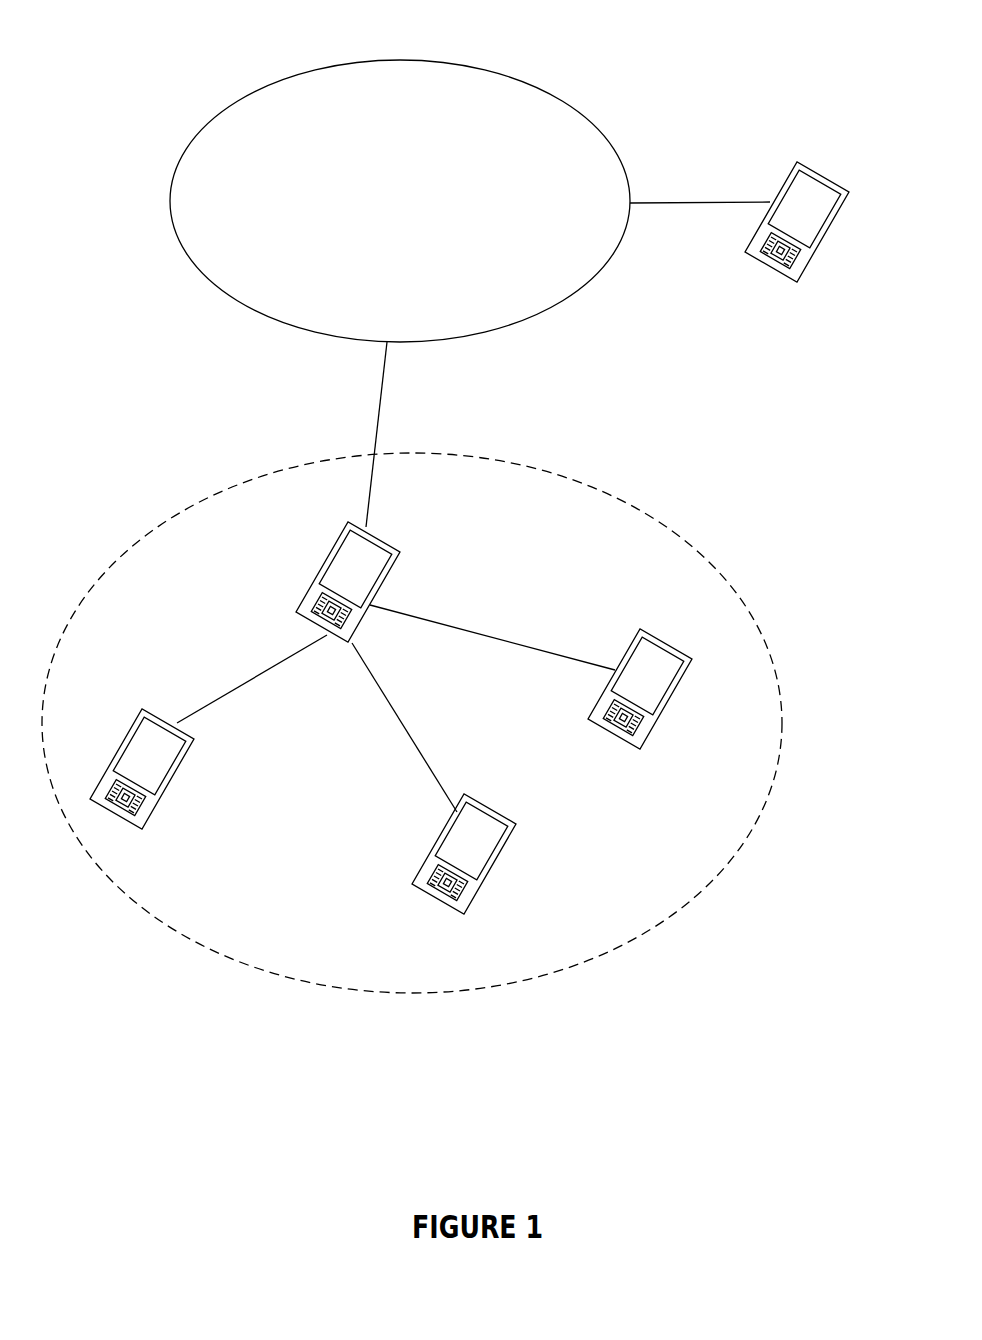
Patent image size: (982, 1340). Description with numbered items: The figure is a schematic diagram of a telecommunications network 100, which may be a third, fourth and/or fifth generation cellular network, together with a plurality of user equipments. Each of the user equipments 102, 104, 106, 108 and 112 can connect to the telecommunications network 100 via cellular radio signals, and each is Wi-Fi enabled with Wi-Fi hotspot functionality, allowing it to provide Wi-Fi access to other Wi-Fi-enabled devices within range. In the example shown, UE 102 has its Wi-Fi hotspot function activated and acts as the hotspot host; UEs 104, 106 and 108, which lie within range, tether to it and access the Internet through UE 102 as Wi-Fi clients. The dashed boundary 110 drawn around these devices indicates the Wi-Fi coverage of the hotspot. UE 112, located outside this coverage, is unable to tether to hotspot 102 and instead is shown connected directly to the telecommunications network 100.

The telecommunications network 100 is at (402, 60).
The UE 102 is at (315, 573).
The UE 104 is at (148, 823).
The UE 106 is at (470, 905).
The UE 108 is at (670, 702).
The local network / group 110 is at (145, 537).
The UE 112 is at (802, 272).